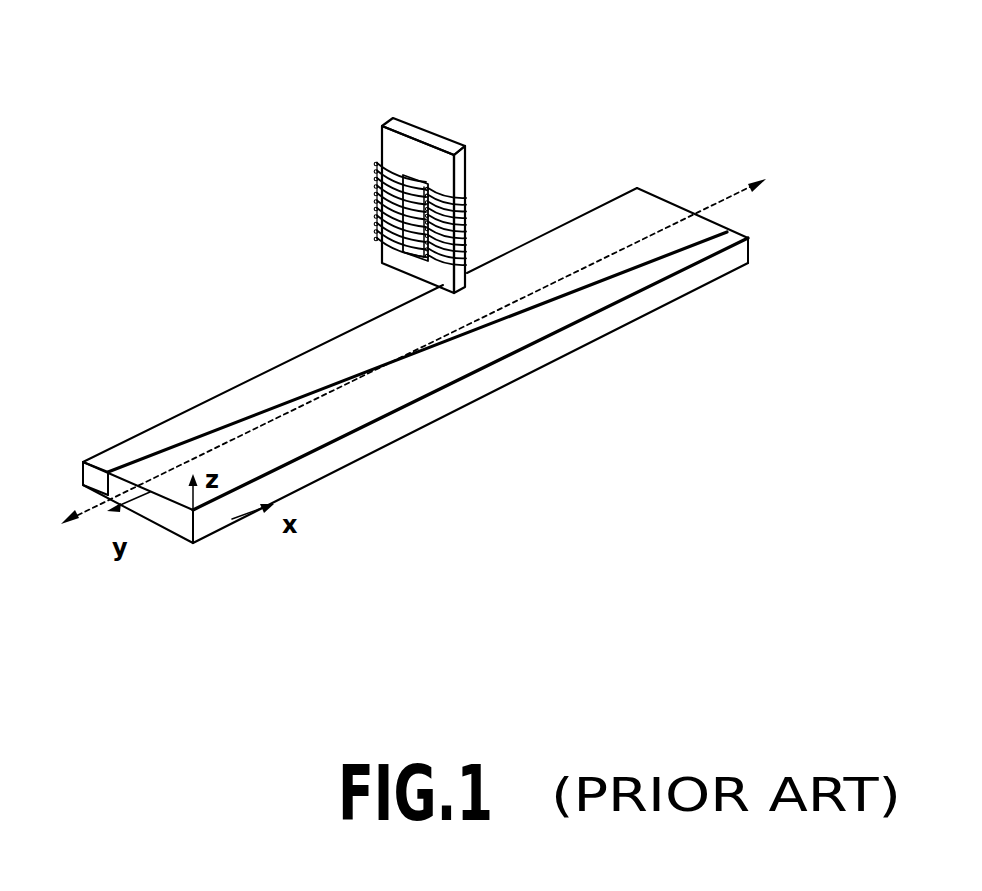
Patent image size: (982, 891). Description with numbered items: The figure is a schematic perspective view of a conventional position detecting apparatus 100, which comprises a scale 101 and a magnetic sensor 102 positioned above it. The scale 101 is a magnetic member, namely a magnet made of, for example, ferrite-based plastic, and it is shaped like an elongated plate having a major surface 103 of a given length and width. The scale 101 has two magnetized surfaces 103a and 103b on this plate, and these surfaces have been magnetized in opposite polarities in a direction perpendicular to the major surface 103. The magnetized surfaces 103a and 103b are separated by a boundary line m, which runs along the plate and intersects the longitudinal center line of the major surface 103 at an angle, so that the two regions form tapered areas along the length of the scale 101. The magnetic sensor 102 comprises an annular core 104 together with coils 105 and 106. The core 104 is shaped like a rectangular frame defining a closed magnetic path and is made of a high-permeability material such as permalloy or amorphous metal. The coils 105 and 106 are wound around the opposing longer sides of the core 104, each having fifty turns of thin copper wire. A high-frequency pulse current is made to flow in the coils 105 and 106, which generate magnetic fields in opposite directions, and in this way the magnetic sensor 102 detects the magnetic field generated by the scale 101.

The position detecting apparatus 100 is at (186, 146).
The scale 101 is at (293, 358).
The magnetic sensor 102 is at (417, 156).
The major surface 103 is at (132, 436).
The magnetized surface 103a is at (658, 208).
The magnetized surface 103b is at (488, 347).
The annular core 104 is at (466, 156).
The coil 105 is at (466, 218).
The coil 106 is at (377, 196).
The boundary line m is at (683, 246).